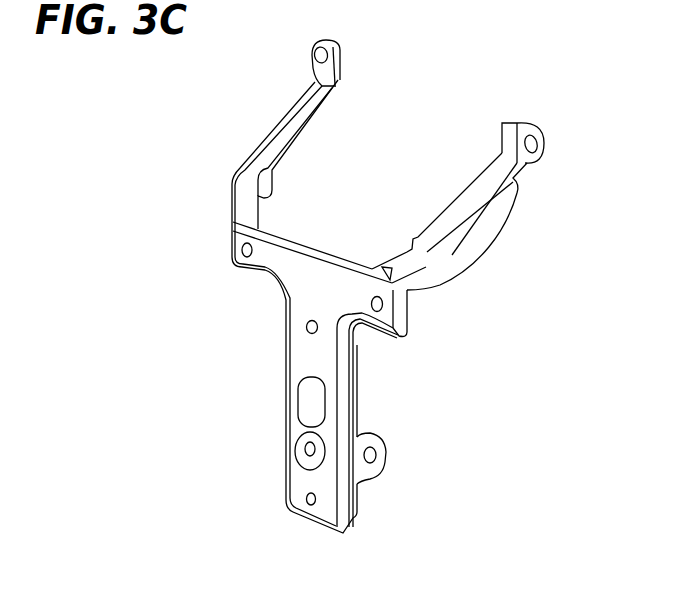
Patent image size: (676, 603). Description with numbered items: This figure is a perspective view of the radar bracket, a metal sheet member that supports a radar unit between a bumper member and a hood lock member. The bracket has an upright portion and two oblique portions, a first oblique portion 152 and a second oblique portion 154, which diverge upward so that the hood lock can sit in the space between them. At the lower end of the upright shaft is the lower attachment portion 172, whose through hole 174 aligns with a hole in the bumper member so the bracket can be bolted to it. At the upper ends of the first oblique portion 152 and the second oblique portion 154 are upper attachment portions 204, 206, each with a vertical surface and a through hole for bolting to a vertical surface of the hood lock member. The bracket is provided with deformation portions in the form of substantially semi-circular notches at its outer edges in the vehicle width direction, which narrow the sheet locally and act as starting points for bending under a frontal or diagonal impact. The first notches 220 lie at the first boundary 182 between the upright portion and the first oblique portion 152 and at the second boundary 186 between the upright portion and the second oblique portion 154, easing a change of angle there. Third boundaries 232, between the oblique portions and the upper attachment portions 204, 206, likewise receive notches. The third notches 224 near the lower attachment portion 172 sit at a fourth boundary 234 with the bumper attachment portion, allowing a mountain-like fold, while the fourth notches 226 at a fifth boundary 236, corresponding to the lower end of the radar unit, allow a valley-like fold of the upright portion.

The first oblique portion 152 is at (483, 208).
The second oblique portion 154 is at (278, 140).
The lower attachment portion 172 is at (277, 468).
The through hole 174 is at (311, 506).
The first boundary 182 is at (388, 280).
The second boundary 186 is at (262, 228).
The upper attachment portion 204 is at (546, 152).
The upper attachment portion 206 is at (308, 60).
The first notch 220 is at (407, 290).
The third notch 224 is at (357, 484).
The fourth notch 226 is at (357, 373).
The third boundary 232 is at (322, 85).
The fourth boundary 234 is at (338, 490).
The fifth boundary 236 is at (337, 373).